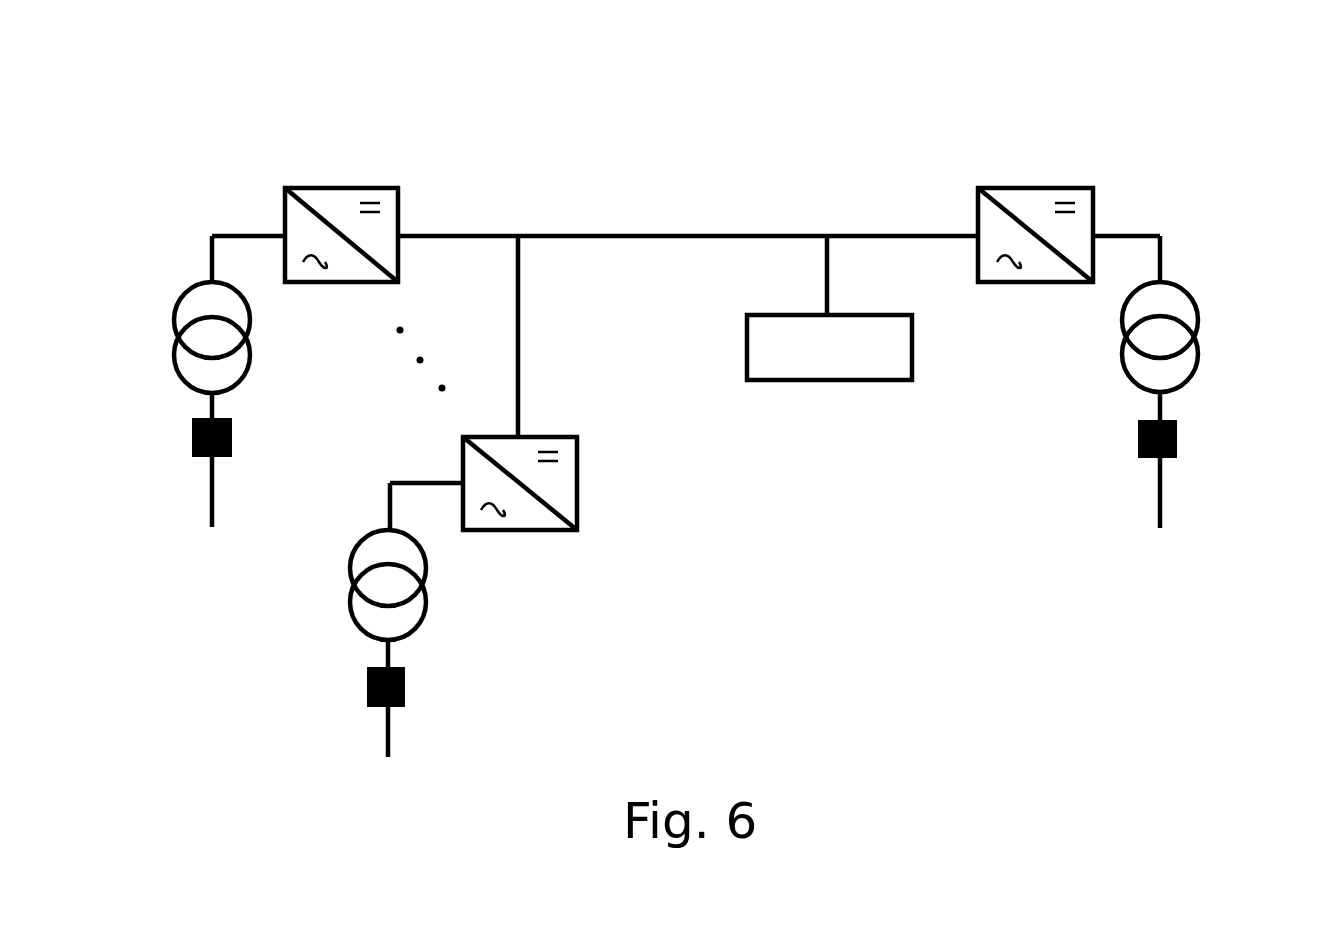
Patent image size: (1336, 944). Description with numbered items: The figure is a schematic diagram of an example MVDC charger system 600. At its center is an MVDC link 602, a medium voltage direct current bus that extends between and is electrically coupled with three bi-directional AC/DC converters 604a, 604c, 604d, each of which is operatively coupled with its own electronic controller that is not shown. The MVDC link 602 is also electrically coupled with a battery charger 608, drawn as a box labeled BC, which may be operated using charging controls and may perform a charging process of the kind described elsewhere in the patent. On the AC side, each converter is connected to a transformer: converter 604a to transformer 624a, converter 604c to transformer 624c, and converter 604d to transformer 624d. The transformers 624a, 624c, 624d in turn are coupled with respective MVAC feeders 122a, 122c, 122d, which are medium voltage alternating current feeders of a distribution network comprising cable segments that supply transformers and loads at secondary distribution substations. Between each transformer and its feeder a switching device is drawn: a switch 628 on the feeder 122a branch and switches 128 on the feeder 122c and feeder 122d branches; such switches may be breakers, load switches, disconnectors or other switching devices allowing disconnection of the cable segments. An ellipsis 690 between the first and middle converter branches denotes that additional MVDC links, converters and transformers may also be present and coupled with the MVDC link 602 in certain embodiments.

The MVDC charger system 600 is at (1243, 118).
The MVDC link 602 is at (700, 237).
The bi-directional AC/DC converter 604a is at (330, 187).
The bi-directional AC/DC converter 604c is at (577, 483).
The bi-directional AC/DC converter 604d is at (1035, 187).
The battery charger 608 is at (912, 352).
The transformer 624a is at (177, 335).
The transformer 624c is at (357, 583).
The transformer 624d is at (1197, 338).
The circuit breaker 628 is at (232, 435).
The switch 128 is at (405, 690).
The MVAC feeder 122a is at (208, 497).
The MVAC feeder 122c is at (385, 738).
The MVAC feeder 122d is at (1157, 492).
The ellipsis 690 is at (420, 360).